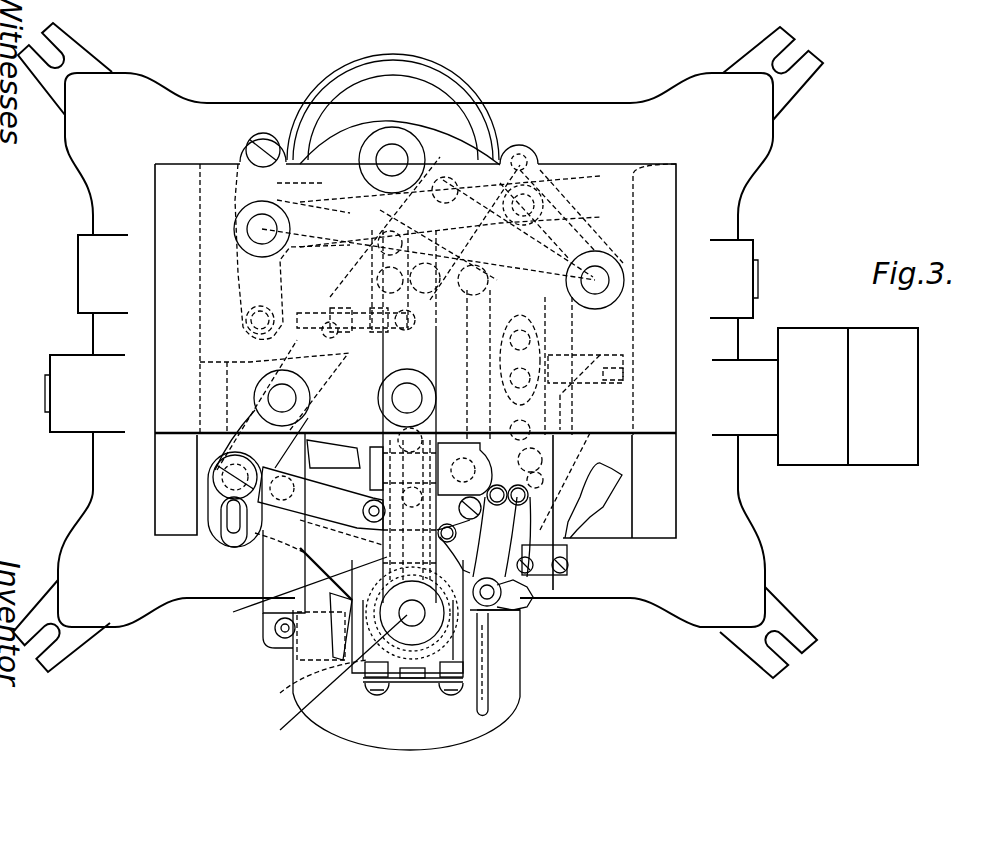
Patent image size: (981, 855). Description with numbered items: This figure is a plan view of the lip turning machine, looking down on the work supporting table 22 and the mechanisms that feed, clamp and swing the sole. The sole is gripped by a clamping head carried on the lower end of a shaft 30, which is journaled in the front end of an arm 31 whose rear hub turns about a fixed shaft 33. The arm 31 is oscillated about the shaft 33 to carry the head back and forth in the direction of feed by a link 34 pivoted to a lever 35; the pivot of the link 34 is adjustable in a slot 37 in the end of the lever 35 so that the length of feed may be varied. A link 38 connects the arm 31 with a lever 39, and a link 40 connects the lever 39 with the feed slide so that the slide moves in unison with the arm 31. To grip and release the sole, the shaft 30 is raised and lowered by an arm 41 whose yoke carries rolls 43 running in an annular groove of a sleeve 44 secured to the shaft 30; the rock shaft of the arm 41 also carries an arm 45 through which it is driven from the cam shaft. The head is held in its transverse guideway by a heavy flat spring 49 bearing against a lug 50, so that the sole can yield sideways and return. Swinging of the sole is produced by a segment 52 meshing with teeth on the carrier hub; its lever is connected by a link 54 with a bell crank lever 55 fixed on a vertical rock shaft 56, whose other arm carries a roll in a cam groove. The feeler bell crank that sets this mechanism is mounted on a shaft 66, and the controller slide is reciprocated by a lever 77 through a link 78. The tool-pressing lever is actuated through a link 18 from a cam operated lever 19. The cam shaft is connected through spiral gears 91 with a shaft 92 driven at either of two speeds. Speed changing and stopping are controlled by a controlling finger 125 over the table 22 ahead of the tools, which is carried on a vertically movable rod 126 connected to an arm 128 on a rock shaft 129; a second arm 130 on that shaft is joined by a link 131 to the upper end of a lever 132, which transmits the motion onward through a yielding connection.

The link 18 is at (475, 350).
The cam operated lever 19 is at (538, 150).
The sole supporting table 22 is at (520, 705).
The shaft 30 is at (338, 680).
The arm 31 is at (423, 623).
The fixed shaft 33 is at (400, 397).
The link 34 is at (323, 510).
The lever 35 is at (213, 505).
The slot 37 is at (230, 518).
The link 38 is at (340, 475).
The lever 39 is at (297, 443).
The link 40 is at (295, 655).
The arm 41 is at (373, 563).
The rolls 43 is at (330, 673).
The sleeve 44 is at (490, 640).
The arm 45 is at (480, 470).
The heavy flat spring 49 is at (428, 683).
The lug 50 is at (413, 683).
The segment 52 is at (263, 611).
The link 54 is at (297, 312).
The bell crank lever 55 is at (250, 275).
The vertical rock shaft 56 is at (258, 228).
The shaft 66 is at (573, 527).
The lever 77 is at (312, 100).
The link 78 is at (535, 230).
The spiral gears 91 is at (50, 390).
The shaft 92 is at (760, 277).
The controlling finger 125 is at (490, 677).
The vertically movable rod 126 is at (523, 600).
The arm 128 is at (545, 603).
The rock shaft 129 is at (547, 540).
The second arm 130 is at (553, 363).
The link 131 is at (593, 363).
The lever 132 is at (623, 377).